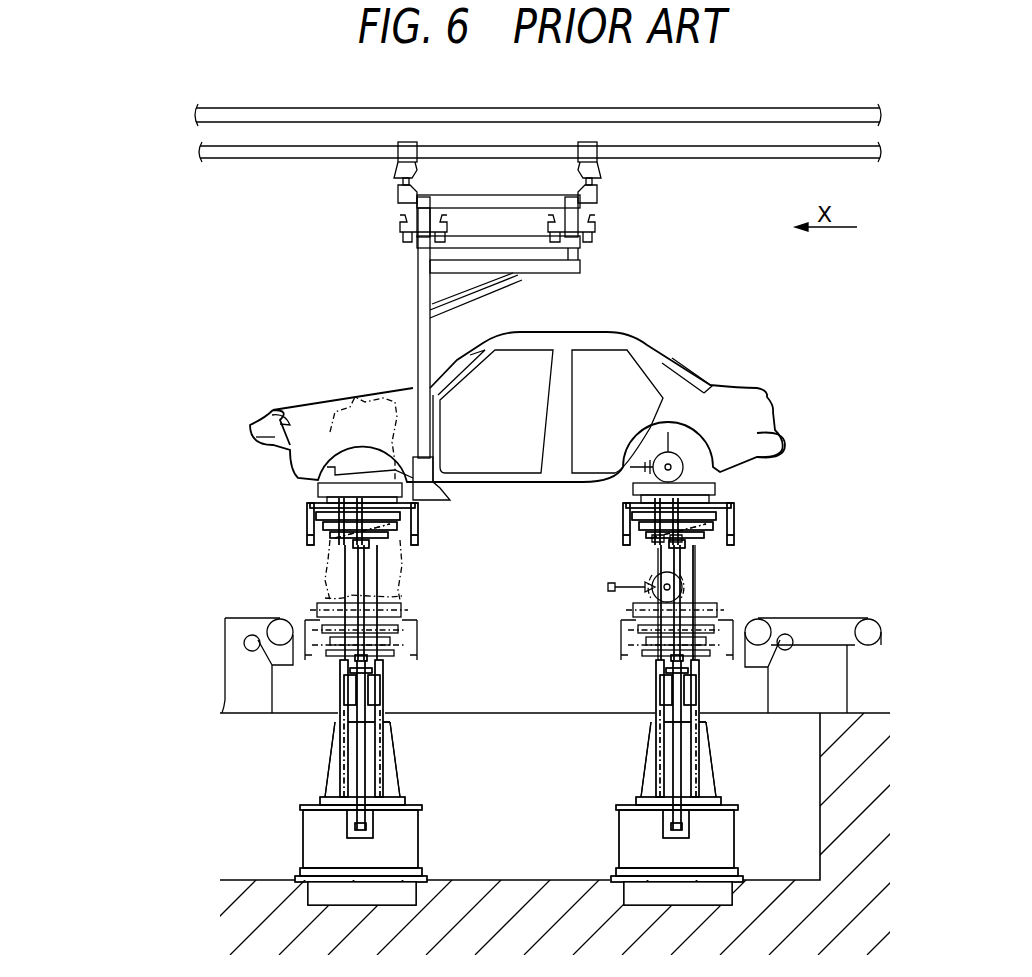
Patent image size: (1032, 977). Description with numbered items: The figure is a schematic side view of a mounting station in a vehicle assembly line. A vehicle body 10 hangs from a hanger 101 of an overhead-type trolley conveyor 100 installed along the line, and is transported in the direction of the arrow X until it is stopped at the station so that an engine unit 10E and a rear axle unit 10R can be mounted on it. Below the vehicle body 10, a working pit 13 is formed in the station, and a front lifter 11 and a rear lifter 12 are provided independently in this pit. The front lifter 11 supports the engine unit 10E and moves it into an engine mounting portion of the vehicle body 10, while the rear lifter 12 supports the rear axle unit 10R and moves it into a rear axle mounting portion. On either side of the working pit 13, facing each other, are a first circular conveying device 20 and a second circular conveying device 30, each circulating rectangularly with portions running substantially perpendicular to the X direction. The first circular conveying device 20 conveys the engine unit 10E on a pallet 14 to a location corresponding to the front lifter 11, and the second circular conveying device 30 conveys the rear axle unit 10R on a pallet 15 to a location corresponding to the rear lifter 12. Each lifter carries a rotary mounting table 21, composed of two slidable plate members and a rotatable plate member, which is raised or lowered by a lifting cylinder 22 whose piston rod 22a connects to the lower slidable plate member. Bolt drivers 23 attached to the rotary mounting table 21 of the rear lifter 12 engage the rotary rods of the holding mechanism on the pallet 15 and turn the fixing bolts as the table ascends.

The trolley conveyor 100 is at (344, 118).
The hanger 101 is at (420, 283).
The vehicle body 10 is at (517, 383).
The engine unit 10E is at (355, 445).
The rear axle unit 10R is at (662, 462).
The front lifter 11 is at (295, 555).
The rear lifter 12 is at (724, 701).
The working pit 13 is at (530, 680).
The pallet 14 is at (326, 488).
The pallet 15 is at (712, 490).
The first circular conveying device 20 is at (258, 618).
The rotary mounting table 21 is at (308, 503).
The lifting cylinder 22 is at (365, 747).
The piston rod 22a is at (362, 565).
The bolt driver 23 is at (672, 541).
The second circular conveying device 30 is at (818, 618).